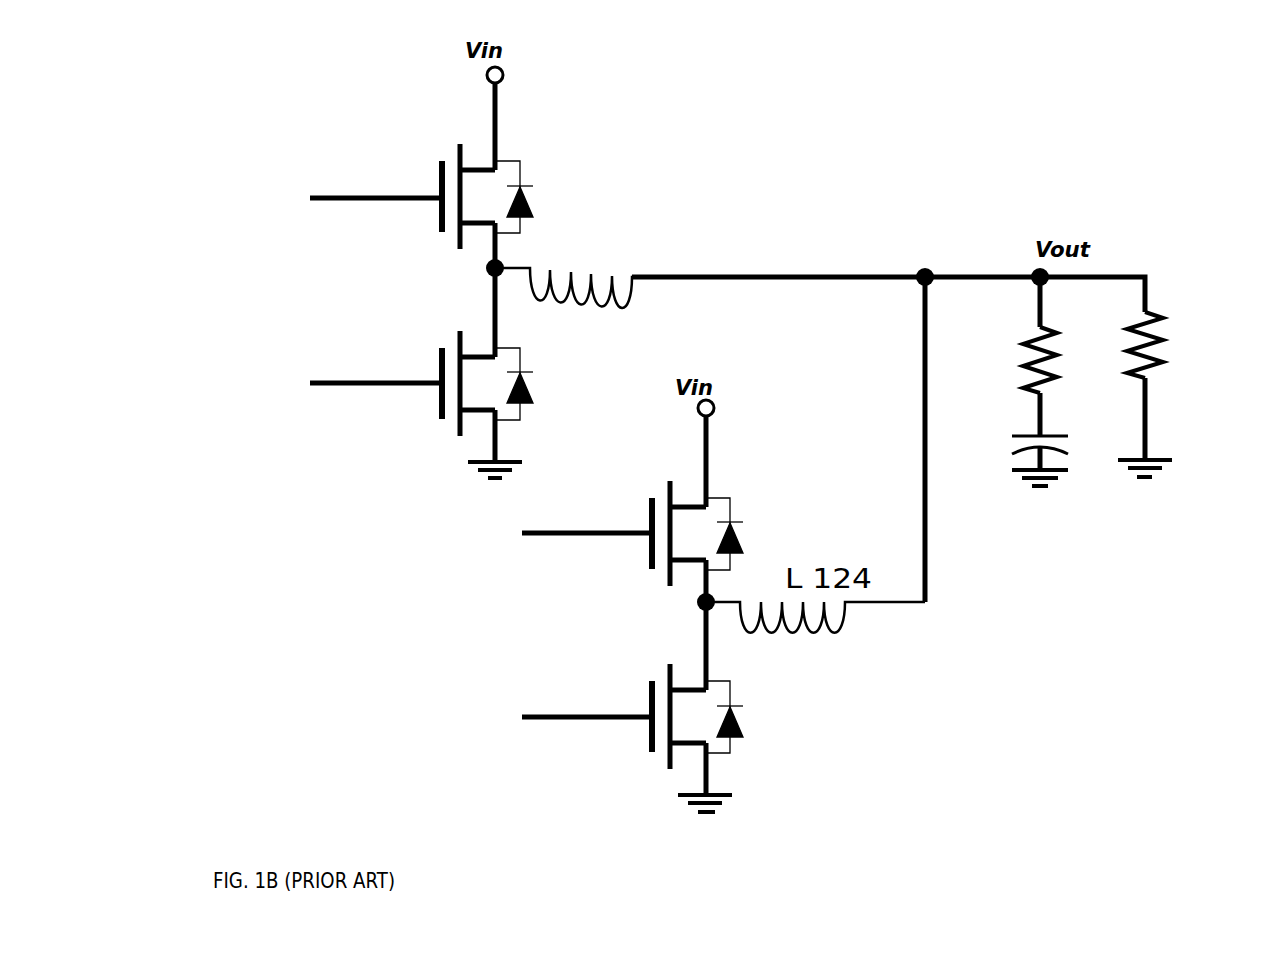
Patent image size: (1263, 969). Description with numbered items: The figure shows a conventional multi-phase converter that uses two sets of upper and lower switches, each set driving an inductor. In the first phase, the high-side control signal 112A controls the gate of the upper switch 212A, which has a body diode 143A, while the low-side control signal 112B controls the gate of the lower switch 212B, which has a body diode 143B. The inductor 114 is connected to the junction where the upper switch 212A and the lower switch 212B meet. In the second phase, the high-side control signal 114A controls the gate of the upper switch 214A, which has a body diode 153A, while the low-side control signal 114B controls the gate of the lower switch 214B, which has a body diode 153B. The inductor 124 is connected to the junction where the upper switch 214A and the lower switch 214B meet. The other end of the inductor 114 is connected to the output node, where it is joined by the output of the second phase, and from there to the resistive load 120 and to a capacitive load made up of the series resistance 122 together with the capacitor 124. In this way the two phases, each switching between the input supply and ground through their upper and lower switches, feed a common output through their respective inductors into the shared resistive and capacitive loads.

The control signal HDRV1 112A is at (336, 173).
The Q1 212A is at (400, 206).
The body diode D 143A is at (571, 197).
The inductor 114 is at (572, 267).
The control signal LDRV1 112B is at (349, 362).
The Q2 212B is at (417, 373).
The body diode 143B is at (571, 384).
The control signal HDRV2 114A is at (548, 517).
The Q3 214A is at (614, 541).
The body diode D 153A is at (778, 534).
The inductor 124 is at (1064, 454).
The control signal LDRV2 114B is at (569, 704).
The Q4 214B is at (633, 707).
The body diode 153B is at (779, 717).
The Rc 122 is at (1067, 356).
The resistive load 120 is at (1177, 392).